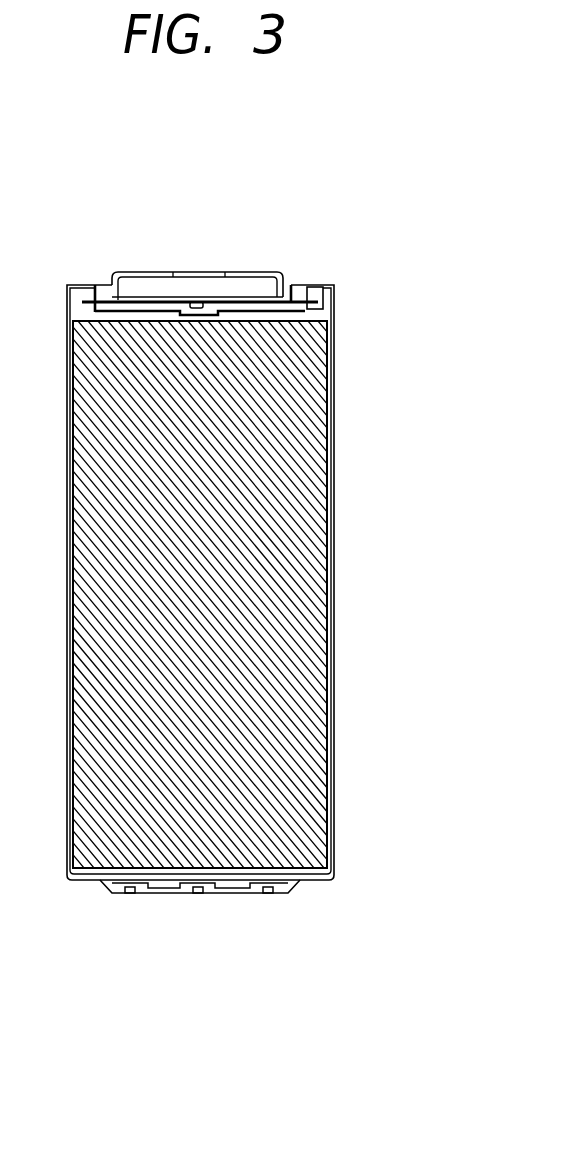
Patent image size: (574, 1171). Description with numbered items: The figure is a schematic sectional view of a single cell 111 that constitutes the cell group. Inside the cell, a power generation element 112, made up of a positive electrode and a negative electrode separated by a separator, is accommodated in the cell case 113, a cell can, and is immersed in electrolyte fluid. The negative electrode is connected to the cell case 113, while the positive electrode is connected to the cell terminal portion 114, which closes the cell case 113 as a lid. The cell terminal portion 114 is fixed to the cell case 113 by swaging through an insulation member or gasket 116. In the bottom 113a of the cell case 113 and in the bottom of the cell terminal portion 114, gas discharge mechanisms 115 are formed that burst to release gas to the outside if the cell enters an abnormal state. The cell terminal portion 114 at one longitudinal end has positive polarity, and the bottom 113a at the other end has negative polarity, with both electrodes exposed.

The cell 111 is at (224, 191).
The power generation element 112 is at (320, 577).
The cell case 113 is at (330, 398).
The bottom of the cell case 113a is at (163, 893).
The cell terminal portion 114 is at (240, 272).
The gas discharge mechanism 115 is at (199, 300).
The insulation member or gasket 116 is at (313, 287).